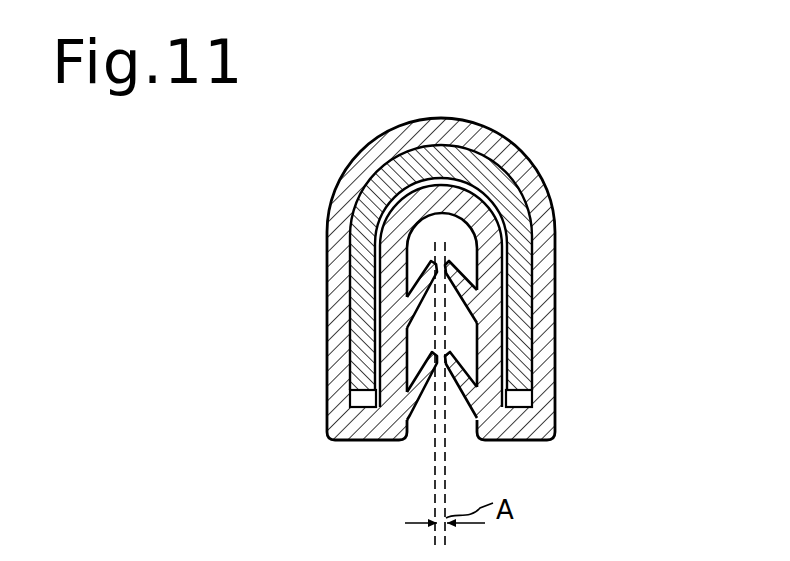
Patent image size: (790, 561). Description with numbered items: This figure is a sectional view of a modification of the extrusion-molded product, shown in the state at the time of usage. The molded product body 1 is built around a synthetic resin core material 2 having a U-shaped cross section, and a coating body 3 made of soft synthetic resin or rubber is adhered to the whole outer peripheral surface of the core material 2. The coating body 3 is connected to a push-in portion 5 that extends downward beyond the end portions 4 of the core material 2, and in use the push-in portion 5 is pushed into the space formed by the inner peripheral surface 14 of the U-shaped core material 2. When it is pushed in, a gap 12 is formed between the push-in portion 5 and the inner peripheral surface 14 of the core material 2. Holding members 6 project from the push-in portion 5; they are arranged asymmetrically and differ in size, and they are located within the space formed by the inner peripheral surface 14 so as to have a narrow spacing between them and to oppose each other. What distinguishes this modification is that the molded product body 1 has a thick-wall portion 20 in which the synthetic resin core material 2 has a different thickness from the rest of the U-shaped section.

The molded product body 1 is at (348, 163).
The synthetic resin core material 2 is at (510, 211).
The coating body 3 is at (545, 342).
The end portions 4 is at (360, 410).
The push-in portion 5 is at (388, 288).
The holding members 6 is at (428, 383).
The gap 12 is at (500, 268).
The inner peripheral surface 14 is at (360, 398).
The thick-wall portion 20 is at (438, 164).